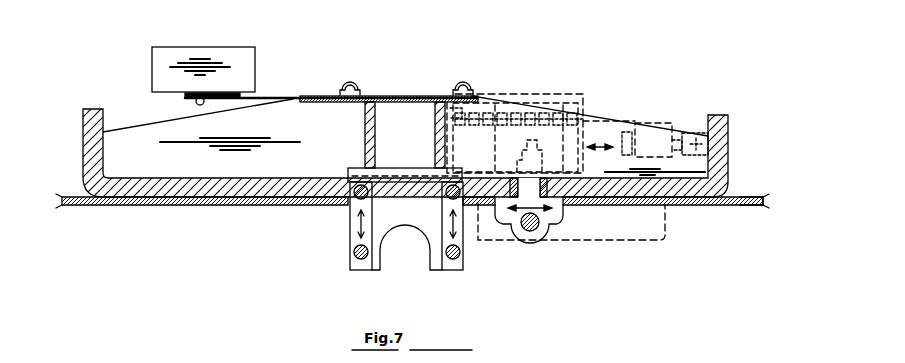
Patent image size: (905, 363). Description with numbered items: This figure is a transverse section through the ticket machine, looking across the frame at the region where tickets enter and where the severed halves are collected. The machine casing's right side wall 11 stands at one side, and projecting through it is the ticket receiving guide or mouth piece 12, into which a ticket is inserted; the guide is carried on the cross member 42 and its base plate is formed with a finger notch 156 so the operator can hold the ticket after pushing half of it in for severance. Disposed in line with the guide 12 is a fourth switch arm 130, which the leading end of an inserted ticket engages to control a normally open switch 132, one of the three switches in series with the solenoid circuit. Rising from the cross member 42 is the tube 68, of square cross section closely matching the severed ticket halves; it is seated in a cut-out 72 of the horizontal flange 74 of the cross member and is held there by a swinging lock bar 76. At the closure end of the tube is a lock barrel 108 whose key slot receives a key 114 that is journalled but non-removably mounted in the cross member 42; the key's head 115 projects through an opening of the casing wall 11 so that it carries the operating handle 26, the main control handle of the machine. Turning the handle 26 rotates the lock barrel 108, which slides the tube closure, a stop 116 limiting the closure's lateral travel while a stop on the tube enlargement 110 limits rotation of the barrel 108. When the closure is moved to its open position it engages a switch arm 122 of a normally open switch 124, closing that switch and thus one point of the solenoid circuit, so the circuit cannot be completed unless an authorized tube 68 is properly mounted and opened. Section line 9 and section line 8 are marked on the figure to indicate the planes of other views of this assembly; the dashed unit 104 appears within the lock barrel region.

The horizontal flange 74 is at (115, 153).
The cross member 42 is at (228, 205).
The right side wall 11 is at (750, 207).
The normally open switch 132 is at (152, 64).
The fourth switch arm 130 is at (196, 101).
The swinging lock bar 76 is at (406, 95).
The tube 68 is at (394, 106).
The cut-out 72 is at (365, 147).
The ticket receiving guide 12 is at (350, 222).
The finger notch 156 is at (389, 246).
The head 115 is at (544, 232).
The operating handle 26 is at (642, 237).
The lock barrel 108 is at (512, 142).
The drive unit 104 is at (568, 145).
The tube enlargement 110 is at (598, 112).
The stop 116 is at (452, 126).
The key 114 is at (537, 163).
The switch arm 122 is at (650, 128).
The normally open switch 124 is at (692, 130).
The section line 9- 9 is at (292, 84).
The section line 8- 8 is at (327, 281).